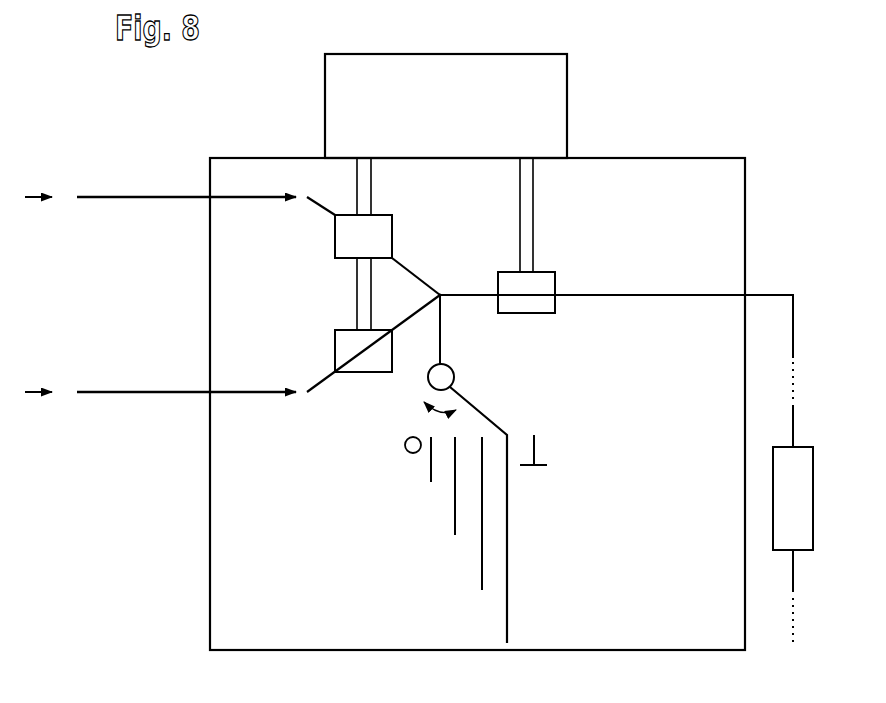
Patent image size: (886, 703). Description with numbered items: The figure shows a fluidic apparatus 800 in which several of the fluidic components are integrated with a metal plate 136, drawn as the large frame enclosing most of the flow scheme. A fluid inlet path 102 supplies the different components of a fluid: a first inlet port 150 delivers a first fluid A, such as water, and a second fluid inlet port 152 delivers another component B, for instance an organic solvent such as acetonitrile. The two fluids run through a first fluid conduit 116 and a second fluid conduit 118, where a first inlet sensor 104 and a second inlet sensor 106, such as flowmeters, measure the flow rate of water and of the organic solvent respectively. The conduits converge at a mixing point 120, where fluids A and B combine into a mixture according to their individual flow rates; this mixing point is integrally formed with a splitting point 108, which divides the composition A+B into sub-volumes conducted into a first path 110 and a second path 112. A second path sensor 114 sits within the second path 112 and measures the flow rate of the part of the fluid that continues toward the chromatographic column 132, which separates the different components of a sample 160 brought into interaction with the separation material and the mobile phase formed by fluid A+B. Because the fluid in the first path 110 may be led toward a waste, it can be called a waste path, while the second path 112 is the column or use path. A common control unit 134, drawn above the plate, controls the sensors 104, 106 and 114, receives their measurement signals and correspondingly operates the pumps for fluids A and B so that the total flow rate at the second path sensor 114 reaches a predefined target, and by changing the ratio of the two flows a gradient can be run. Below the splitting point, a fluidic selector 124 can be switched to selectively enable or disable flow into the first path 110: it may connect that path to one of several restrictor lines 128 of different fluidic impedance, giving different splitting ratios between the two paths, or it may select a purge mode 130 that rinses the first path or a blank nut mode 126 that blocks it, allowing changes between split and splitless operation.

The fluidic apparatus 800 is at (465, 356).
The metal plate 136 is at (220, 145).
The common control unit 134 is at (325, 97).
The first inlet port 150 is at (78, 195).
The second fluid inlet port 152 is at (79, 394).
The first fluid conduit 116 is at (162, 195).
The second fluid conduit 118 is at (162, 394).
The first inlet sensor 104 is at (335, 237).
The second inlet sensor 106 is at (335, 350).
The fluid inlet path 102 is at (244, 212).
The splitting point 108 is at (444, 288).
The mixing point 120 is at (474, 247).
The second path 112 is at (478, 292).
The second path sensor 114 is at (548, 272).
The first path 110 is at (443, 335).
The fluidic selector 124 is at (470, 379).
The blank nut mode 126 is at (540, 477).
The restrictor lines 128 is at (429, 518).
The purge mode 130 is at (397, 453).
The chromatographic column 132 is at (773, 495).
The sample 160 is at (806, 384).